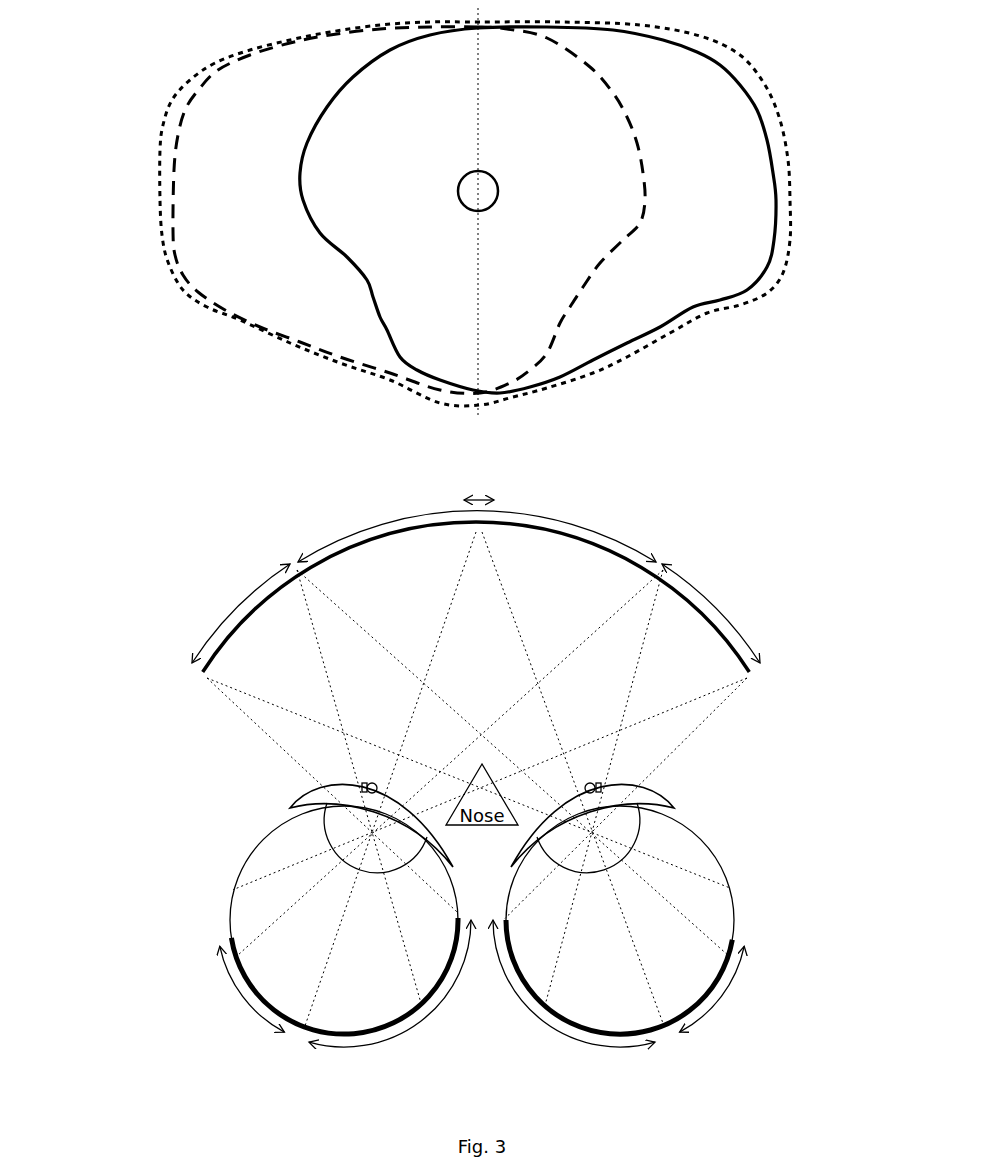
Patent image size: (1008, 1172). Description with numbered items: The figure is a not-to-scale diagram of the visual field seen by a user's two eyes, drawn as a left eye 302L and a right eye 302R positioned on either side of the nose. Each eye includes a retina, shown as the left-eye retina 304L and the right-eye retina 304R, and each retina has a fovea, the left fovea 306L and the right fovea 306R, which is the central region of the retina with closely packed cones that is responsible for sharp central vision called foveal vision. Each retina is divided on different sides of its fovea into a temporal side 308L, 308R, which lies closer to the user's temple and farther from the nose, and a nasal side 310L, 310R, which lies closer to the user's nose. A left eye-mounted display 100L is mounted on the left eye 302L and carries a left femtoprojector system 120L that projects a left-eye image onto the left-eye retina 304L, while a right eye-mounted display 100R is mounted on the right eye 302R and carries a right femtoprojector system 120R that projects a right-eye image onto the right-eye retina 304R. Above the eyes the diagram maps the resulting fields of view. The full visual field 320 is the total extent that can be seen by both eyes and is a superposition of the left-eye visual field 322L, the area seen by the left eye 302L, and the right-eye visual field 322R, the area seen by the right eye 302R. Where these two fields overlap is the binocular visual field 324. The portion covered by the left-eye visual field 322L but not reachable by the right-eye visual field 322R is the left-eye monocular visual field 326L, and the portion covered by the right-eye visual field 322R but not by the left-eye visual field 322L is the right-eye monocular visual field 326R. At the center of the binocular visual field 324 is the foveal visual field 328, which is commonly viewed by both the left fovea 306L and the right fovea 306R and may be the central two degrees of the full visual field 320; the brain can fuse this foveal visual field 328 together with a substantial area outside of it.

The full visual field 320 is at (152, 734).
The left-eye visual field 322L is at (172, 212).
The right-eye visual field 322R is at (770, 146).
The binocular visual field 324 is at (552, 298).
The left-eye monocular visual field 326L is at (280, 230).
The right-eye monocular visual field 326R is at (690, 232).
The foveal visual field 328 is at (466, 208).
The left eye-mounted display 100L is at (292, 806).
The right eye-mounted display 100R is at (687, 806).
The left femtoprojector system 120L is at (372, 778).
The right femtoprojector system 120R is at (590, 778).
The left eye 302L is at (344, 920).
The right eye 302R is at (620, 920).
The left-eye retina 304L is at (227, 936).
The right-eye retina 304R is at (737, 936).
The left fovea 306L is at (302, 1036).
The right fovea 306R is at (662, 1037).
The temporal side 308L is at (238, 991).
The temporal side 308R is at (727, 988).
The nasal side 310L is at (378, 1045).
The nasal side 310R is at (570, 1039).